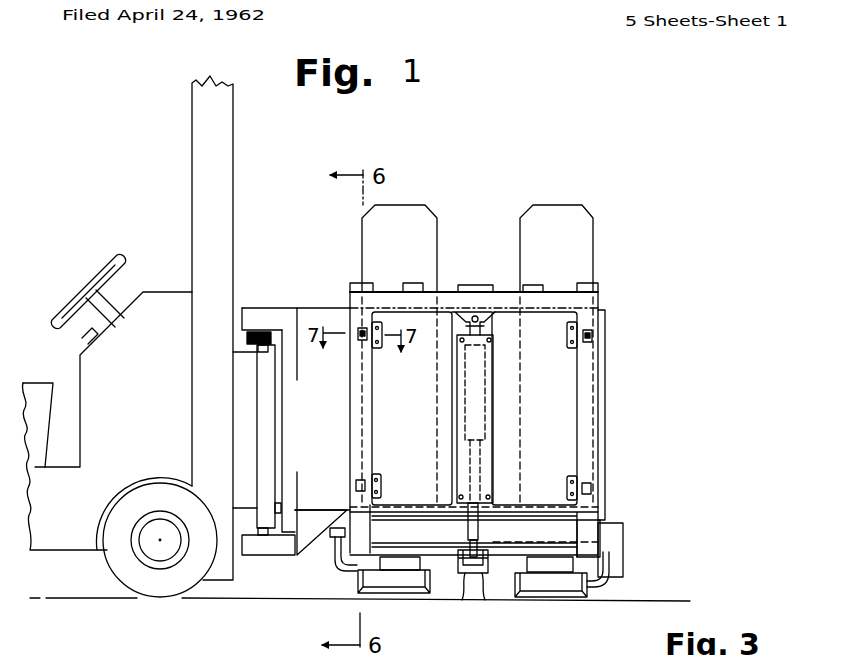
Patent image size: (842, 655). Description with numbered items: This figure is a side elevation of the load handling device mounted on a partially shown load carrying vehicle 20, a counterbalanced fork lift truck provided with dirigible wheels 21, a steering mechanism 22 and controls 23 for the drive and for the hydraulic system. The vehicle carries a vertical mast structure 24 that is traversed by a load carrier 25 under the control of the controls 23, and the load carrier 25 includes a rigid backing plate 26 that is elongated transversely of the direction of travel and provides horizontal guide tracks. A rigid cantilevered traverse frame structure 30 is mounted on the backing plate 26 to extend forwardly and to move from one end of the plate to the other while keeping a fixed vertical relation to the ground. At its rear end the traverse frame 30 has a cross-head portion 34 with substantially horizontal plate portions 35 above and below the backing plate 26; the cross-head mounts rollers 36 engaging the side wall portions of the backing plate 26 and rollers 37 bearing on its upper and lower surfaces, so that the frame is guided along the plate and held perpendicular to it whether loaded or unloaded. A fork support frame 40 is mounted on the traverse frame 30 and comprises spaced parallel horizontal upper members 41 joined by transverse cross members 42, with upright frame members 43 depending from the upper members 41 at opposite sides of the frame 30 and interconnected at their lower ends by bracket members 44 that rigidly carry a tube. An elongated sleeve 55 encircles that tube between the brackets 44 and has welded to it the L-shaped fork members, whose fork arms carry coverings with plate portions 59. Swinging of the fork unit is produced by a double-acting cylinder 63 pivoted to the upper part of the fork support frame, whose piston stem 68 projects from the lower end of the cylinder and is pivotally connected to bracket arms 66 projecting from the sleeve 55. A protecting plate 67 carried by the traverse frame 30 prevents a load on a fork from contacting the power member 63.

The load carrying vehicle 20 is at (158, 290).
The dirigible wheels 21 is at (160, 600).
The steering mechanism 22 is at (100, 270).
The controls 23 is at (86, 340).
The vertical mast structure 24 is at (203, 162).
The load carrier 25 is at (244, 453).
The backing plate 26 is at (265, 418).
The traverse frame structure 30 is at (334, 305).
The cross-head portion 34 is at (295, 322).
The horizontal plate portions 35 is at (252, 318).
The rollers 36 is at (247, 340).
The rollers 37 is at (262, 352).
The fork support frame 40 is at (557, 290).
The upper members 41 is at (388, 300).
The cross members 42 is at (530, 286).
The upright frame members 43 is at (352, 408).
The bracket members 44 is at (362, 538).
The sleeve 55 is at (512, 533).
The plate portion 59 is at (531, 231).
The cylinder 63 is at (480, 372).
The bracket arms 66 is at (476, 580).
The protecting plate 67 is at (488, 396).
The stem 68 is at (480, 458).